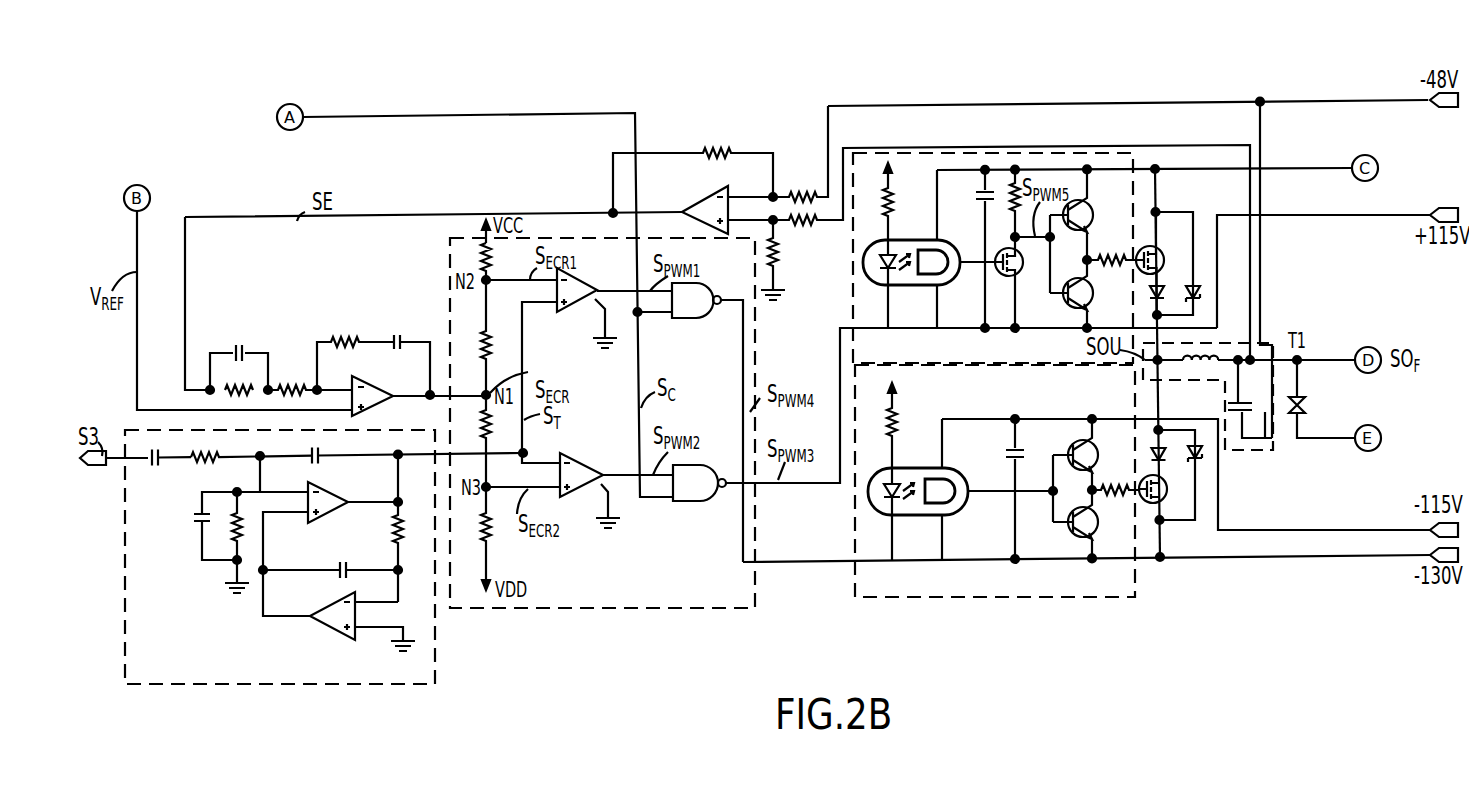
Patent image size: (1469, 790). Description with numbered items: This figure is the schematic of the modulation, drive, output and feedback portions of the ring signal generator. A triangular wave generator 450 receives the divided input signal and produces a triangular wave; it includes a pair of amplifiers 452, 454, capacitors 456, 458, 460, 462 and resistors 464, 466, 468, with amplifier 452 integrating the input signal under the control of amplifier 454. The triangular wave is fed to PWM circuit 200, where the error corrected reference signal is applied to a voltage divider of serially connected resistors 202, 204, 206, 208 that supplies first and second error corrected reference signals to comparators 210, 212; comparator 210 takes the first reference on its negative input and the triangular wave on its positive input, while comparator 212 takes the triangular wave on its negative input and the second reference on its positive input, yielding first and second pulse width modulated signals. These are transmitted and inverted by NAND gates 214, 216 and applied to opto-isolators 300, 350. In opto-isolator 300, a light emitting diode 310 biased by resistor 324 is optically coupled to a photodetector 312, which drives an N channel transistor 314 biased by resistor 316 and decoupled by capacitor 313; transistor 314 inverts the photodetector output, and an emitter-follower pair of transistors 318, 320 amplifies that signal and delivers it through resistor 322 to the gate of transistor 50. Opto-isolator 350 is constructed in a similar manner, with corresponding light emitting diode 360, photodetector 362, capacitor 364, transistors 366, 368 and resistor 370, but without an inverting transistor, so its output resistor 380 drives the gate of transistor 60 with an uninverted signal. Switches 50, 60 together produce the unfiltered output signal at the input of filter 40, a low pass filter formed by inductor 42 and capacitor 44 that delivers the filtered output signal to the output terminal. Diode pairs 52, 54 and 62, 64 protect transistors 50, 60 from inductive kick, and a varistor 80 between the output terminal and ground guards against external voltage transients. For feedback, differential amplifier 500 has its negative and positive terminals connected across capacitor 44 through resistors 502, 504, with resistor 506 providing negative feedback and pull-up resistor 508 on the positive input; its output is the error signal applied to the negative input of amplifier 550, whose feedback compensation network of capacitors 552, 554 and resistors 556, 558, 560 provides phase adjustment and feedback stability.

The filter 40 is at (1226, 395).
The inductor 42 is at (1200, 352).
The capacitor 44 is at (1256, 410).
The transistor 50 is at (1157, 254).
The diode 52 is at (1160, 290).
The diode 54 is at (1203, 284).
The transistor 60 is at (1161, 494).
The diode 62 is at (1162, 488).
The diode 64 is at (1200, 442).
The varistor 80 is at (1306, 405).
The PWM circuit 200 is at (693, 423).
The resistor 202 is at (491, 258).
The resistor 204 is at (496, 346).
The resistor 206 is at (493, 428).
The resistor 208 is at (493, 540).
The comparator 210 is at (587, 283).
The comparator 212 is at (585, 460).
The NAND gate 214 is at (692, 318).
The NAND gate 216 is at (690, 502).
The opto-isolator 300 is at (1033, 237).
The light emitting diode 310 is at (890, 253).
The photodetector 312 is at (942, 258).
The capacitor 313 is at (975, 194).
The transistor 314 is at (1003, 278).
The resistor 316 is at (1010, 185).
The transistor 318 is at (1088, 210).
The transistor 320 is at (1068, 300).
The resistor 322 is at (1112, 255).
The resistor 324 is at (891, 200).
The opto-isolator 350 is at (1033, 481).
The optocoupler 360 is at (894, 482).
The phototransistor 362 is at (948, 482).
The capacitor 364 is at (1012, 452).
The transistor 366 is at (1076, 440).
The transistor 368 is at (1074, 530).
The resistor 370 is at (894, 428).
The resistor 380 is at (1114, 485).
The second generator 450 is at (324, 555).
The amplifier 452 is at (330, 492).
The amplifier 454 is at (328, 628).
The capacitor 456 is at (155, 467).
The capacitor 458 is at (312, 449).
The capacitor 460 is at (194, 518).
The capacitor 462 is at (341, 562).
The resistor 464 is at (205, 462).
The resistor 466 is at (233, 527).
The resistor 468 is at (393, 533).
The differential amplifier 500 is at (715, 192).
The resistor 502 is at (808, 190).
The resistor 504 is at (808, 228).
The resistor 506 is at (715, 148).
The pull-up resistor 508 is at (780, 255).
The differential amplifier 550 is at (372, 392).
The capacitor 552 is at (236, 345).
The capacitor 554 is at (397, 335).
The resistor 556 is at (243, 385).
The resistor 558 is at (292, 384).
The resistor 560 is at (345, 337).